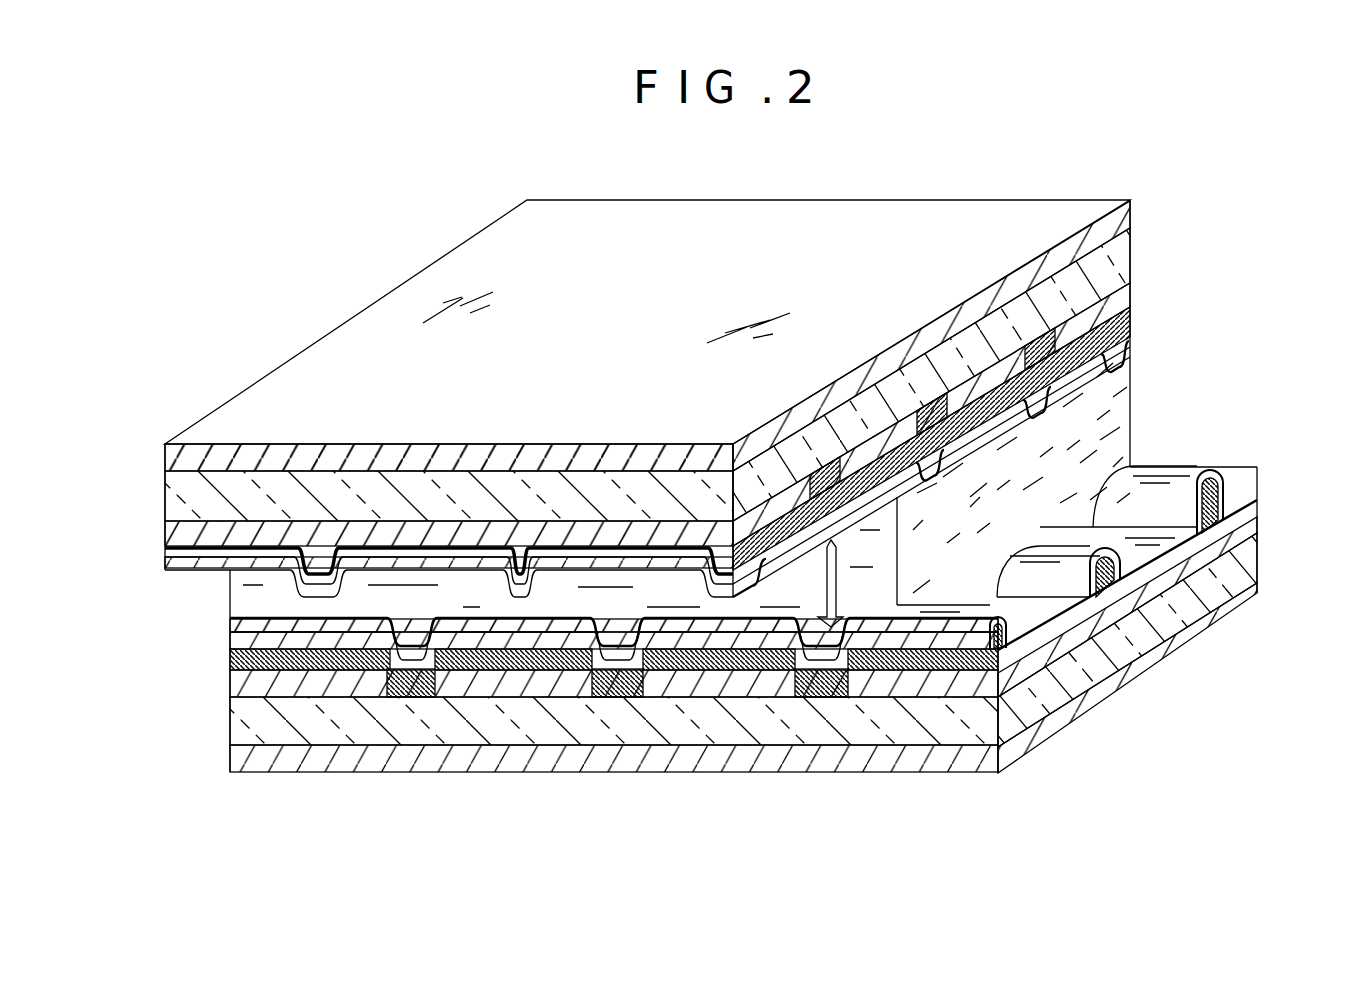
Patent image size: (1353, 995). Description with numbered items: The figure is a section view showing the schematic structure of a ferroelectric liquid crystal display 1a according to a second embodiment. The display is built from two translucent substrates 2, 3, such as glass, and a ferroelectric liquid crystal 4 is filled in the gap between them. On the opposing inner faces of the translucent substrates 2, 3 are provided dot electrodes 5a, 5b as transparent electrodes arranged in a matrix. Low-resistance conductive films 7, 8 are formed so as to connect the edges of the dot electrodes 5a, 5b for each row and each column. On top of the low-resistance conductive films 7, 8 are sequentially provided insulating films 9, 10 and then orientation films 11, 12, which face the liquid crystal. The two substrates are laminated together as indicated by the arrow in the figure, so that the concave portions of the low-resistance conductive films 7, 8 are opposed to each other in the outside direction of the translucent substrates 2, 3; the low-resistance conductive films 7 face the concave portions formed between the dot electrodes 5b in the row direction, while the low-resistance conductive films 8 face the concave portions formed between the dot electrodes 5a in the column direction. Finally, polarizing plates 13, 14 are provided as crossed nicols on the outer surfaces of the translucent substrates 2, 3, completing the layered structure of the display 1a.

The ferroelectric liquid crystal display 1a is at (1028, 192).
The polarizing plate 14 is at (1140, 212).
The translucent substrate 3 is at (1138, 243).
The dot electrode 5b is at (1136, 284).
The low-resistance conductive film 8 is at (1137, 318).
The insulating film 10 is at (1135, 350).
The orientation film 12 is at (1135, 367).
The ferroelectric liquid crystal 4 is at (1122, 402).
The orientation film 11 is at (1257, 467).
The insulating film 9 is at (1258, 490).
The dot electrode 5a is at (1258, 512).
The translucent substrate 2 is at (1258, 548).
The polarizing plate 13 is at (1258, 585).
The low-resistance conductive film 7 is at (230, 662).